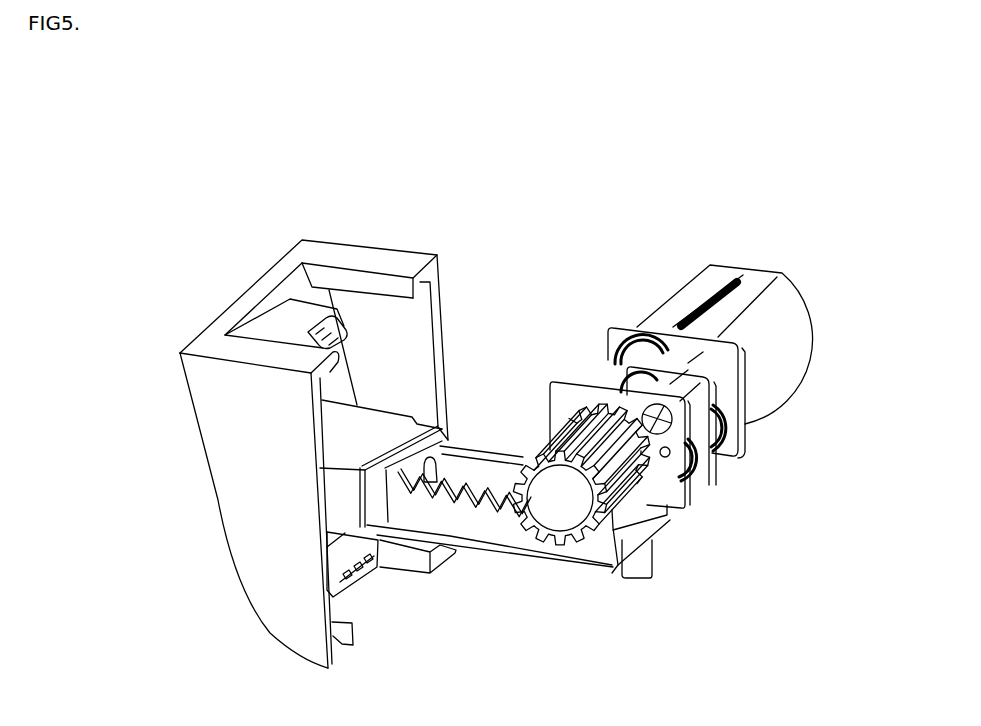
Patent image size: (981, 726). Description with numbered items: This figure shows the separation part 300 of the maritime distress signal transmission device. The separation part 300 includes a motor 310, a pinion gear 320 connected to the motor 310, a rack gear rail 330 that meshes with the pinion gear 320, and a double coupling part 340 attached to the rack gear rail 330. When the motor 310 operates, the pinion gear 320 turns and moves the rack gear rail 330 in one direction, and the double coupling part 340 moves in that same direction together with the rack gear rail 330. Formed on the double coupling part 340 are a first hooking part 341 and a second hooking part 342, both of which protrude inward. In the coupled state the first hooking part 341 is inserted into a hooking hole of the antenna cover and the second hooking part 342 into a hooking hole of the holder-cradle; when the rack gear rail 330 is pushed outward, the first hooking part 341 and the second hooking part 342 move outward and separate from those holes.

The separation part 300 is at (218, 208).
The motor 310 is at (702, 288).
The pinion gear 320 is at (607, 567).
The rack gear rail 330 is at (497, 527).
The double coupling part 340 is at (263, 522).
The first hooking part 341 is at (320, 322).
The second hooking part 342 is at (370, 567).